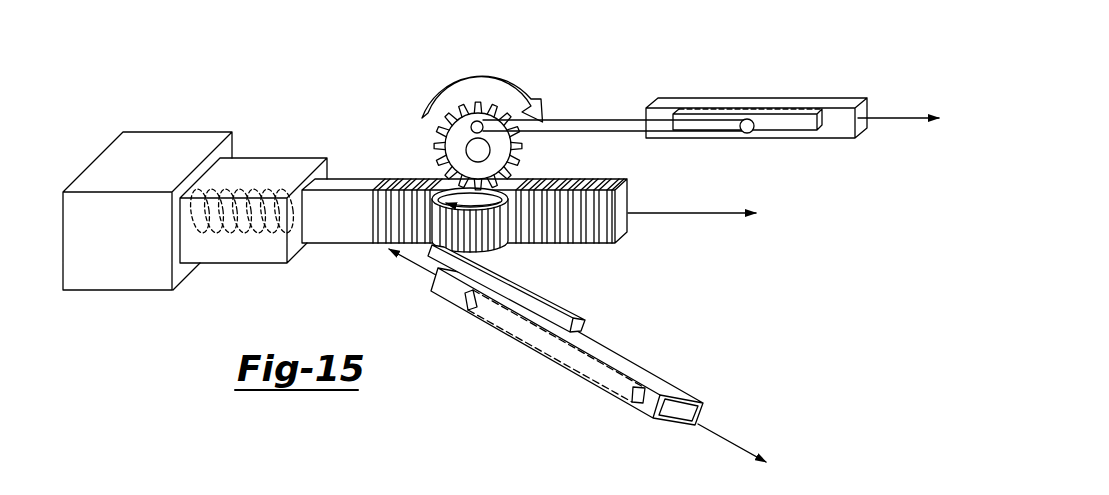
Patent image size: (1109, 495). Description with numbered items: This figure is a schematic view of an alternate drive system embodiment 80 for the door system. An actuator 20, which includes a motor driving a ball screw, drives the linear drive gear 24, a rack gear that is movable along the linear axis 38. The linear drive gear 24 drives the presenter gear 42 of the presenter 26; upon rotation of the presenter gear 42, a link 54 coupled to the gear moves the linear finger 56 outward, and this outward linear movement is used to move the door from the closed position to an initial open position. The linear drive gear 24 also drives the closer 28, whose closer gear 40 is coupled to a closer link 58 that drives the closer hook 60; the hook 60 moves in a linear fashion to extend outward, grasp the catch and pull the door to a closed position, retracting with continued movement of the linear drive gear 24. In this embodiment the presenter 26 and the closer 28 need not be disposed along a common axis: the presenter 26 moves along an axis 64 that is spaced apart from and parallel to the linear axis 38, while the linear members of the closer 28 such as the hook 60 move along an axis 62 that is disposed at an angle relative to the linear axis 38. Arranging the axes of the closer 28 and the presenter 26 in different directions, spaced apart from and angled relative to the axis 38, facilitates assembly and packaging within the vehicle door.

The actuator 20 is at (265, 128).
The linear drive gear 24 is at (626, 224).
The presenter 26 is at (696, 79).
The closer 28 is at (526, 360).
The axis 38 is at (722, 210).
The closer gear 40 is at (497, 243).
The presenter gear 42 is at (440, 138).
The link 54 is at (587, 119).
The linear finger 56 is at (800, 127).
The closer link 58 is at (547, 308).
The closer hook 60 is at (688, 409).
The axis 62 is at (725, 436).
The axis 64 is at (897, 117).
The alternate drive system embodiment 80 is at (317, 83).